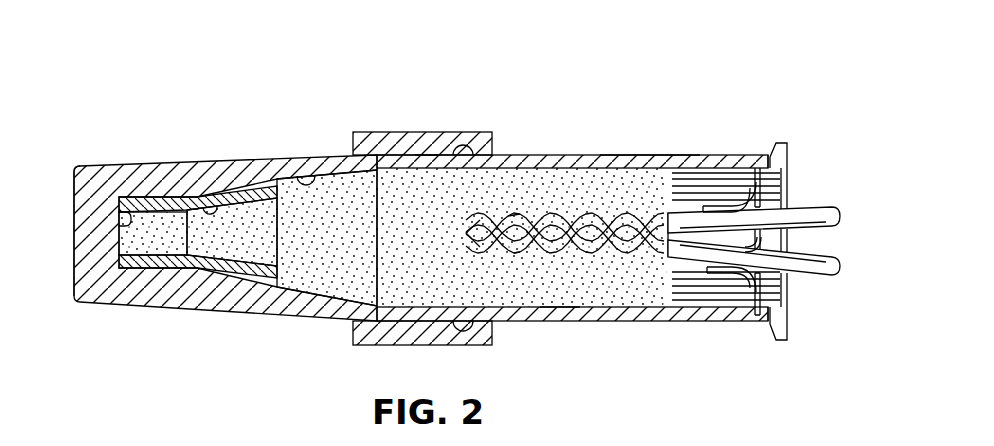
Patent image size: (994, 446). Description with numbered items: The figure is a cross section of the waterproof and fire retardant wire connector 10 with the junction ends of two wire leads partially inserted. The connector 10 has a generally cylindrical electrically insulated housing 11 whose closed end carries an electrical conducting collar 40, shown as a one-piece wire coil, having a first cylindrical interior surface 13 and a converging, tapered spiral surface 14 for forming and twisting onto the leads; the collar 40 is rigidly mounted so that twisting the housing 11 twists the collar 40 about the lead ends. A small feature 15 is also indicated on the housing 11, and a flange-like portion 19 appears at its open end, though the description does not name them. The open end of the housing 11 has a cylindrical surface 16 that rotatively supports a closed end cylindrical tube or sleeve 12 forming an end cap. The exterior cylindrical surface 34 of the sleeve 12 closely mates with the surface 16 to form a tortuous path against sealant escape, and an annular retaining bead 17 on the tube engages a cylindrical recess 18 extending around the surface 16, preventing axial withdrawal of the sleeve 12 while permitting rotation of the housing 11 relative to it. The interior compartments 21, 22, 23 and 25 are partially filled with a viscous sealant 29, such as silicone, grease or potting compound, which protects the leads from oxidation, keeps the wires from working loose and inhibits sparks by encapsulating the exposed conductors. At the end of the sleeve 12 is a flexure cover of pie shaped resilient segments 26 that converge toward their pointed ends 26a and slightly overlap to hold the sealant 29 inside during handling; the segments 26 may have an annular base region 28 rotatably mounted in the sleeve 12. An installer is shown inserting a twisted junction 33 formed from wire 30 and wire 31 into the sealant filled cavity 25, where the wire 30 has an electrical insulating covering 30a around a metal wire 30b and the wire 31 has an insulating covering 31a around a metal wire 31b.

The waterproof and fire retardant wire connector 10 is at (292, 91).
The electrical insulated housing 11 is at (238, 166).
The sleeve 12 is at (578, 162).
The first cylindrical interior surface 13 is at (123, 223).
The spiral surface 14 is at (205, 207).
The groove 15 is at (312, 176).
The cylindrical surface 16 is at (425, 152).
The retaining bead 17 is at (460, 326).
The cylindrical recess 18 is at (110, 166).
The flange 19 is at (376, 140).
The interior compartment 21 is at (141, 249).
The interior compartment 22 is at (221, 249).
The interior compartment 23 is at (318, 249).
The sealant filled cavity 25 is at (409, 247).
The resilient segments 26 is at (757, 171).
The pointed end 26a is at (712, 208).
The annular base region 28 is at (777, 142).
The viscous sealant 29 is at (557, 300).
The wire 30 is at (840, 214).
The electrical insulating covering 30a is at (662, 213).
The metal wire 30b is at (519, 262).
The wire 31 is at (822, 278).
The electrical insulating covering 31a is at (690, 266).
The metal wire 31b is at (514, 216).
The twisted junction 33 is at (598, 252).
The exterior cylindrical surface 34 is at (628, 157).
The electrical conducting collar 40 is at (150, 196).